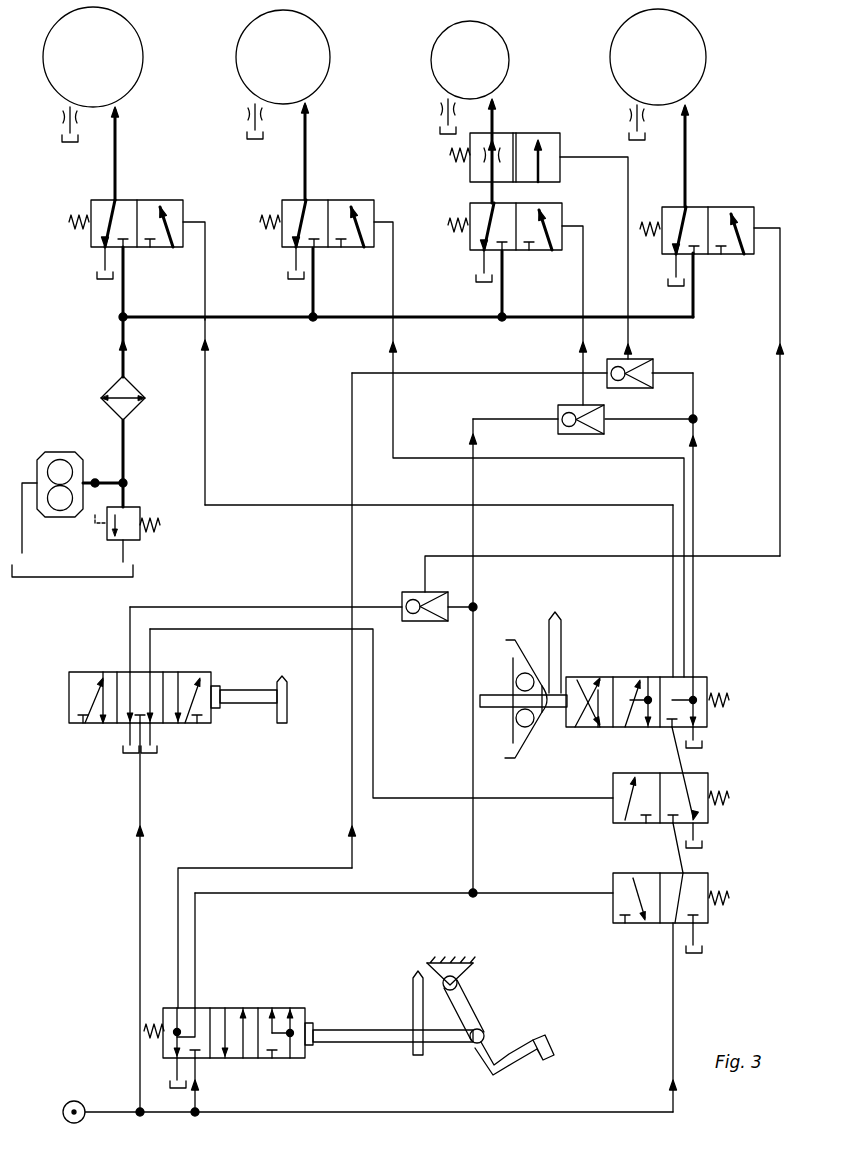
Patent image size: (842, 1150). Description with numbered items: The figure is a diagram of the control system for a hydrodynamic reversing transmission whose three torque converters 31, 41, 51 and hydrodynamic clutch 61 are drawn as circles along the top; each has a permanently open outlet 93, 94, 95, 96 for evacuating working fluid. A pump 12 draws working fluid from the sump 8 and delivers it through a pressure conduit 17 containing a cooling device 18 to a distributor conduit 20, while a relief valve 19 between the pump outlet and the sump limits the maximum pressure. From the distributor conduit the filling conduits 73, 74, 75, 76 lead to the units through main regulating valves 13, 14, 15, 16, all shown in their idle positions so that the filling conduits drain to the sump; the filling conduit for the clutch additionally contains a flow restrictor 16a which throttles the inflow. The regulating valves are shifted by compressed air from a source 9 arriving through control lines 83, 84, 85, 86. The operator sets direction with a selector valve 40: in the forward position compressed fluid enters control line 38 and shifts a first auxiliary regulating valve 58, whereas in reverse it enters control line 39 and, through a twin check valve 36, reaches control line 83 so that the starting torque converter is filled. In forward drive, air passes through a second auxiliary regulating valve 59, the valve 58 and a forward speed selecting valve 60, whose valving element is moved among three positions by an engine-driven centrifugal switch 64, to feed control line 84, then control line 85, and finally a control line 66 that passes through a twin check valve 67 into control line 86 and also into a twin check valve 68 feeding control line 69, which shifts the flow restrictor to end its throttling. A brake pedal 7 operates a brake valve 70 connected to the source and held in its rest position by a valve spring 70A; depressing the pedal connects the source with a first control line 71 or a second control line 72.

The brake pedal 7 is at (468, 1010).
The sump 8 is at (103, 278).
The source of compressed fluid 9 is at (79, 1102).
The pump 12 is at (50, 452).
The main regulating valve 13 is at (690, 209).
The main regulating valve 14 is at (124, 202).
The main regulating valve 15 is at (316, 202).
The main regulating valve 16 is at (470, 204).
The flow restrictor 16a is at (561, 170).
The pressure conduit 17 is at (127, 438).
The cooling device 18 is at (128, 388).
The relief valve 19 is at (138, 540).
The distributor conduit 20 is at (235, 321).
The hydrodynamic torque converter 31 is at (647, 68).
The twin check valve 36 is at (410, 592).
The control line 38 is at (427, 797).
The control line 39 is at (279, 606).
The selector valve 40 is at (73, 697).
The hydrodynamic torque converter 41 is at (82, 68).
The hydrodynamic torque converter 51 is at (272, 68).
The first auxiliary regulating valve 58 is at (705, 774).
The second auxiliary regulating valve 59 is at (705, 876).
The forward speed selecting valve 60 is at (705, 677).
The hydrodynamic clutch 61 is at (459, 71).
The centrifugal switch 64 is at (523, 737).
The control line 66 is at (700, 460).
The twin check valve 67 is at (562, 404).
The twin check valve 68 is at (655, 357).
The control line 69 is at (628, 272).
The brake valve 70 is at (235, 1020).
The valve spring 70A is at (160, 1030).
The first control line 71 is at (418, 893).
The second control line 72 is at (220, 868).
The filling conduit 73 is at (687, 142).
The filling conduit 74 is at (119, 134).
The filling conduit 75 is at (307, 133).
The filling conduit 76 is at (496, 114).
The control line 83 is at (780, 272).
The control line 84 is at (205, 274).
The control line 85 is at (393, 273).
The control line 86 is at (582, 270).
The permanently open outlet 93 is at (634, 108).
The permanently open outlet 94 is at (66, 109).
The permanently open outlet 95 is at (252, 106).
The permanently open outlet 96 is at (446, 102).